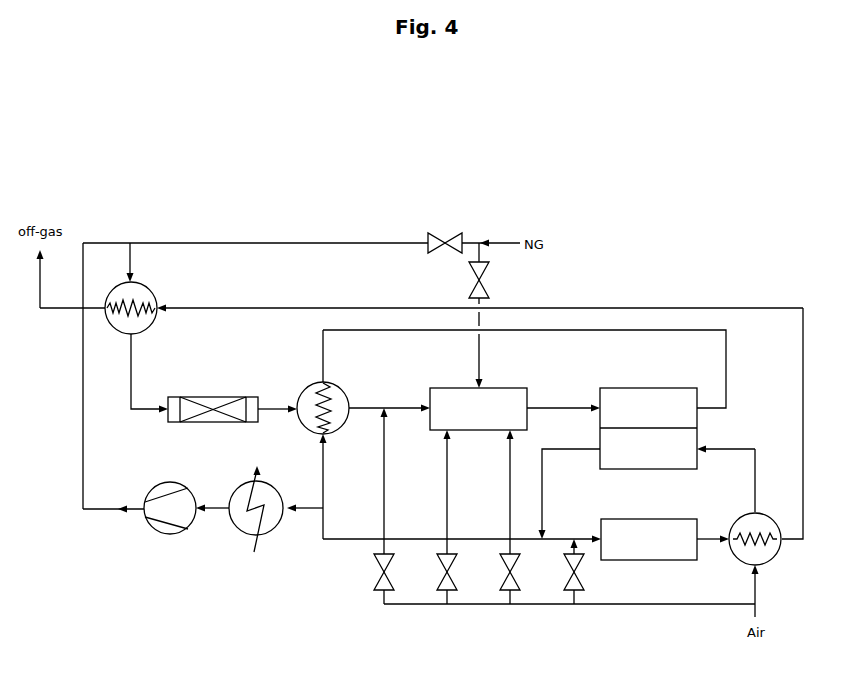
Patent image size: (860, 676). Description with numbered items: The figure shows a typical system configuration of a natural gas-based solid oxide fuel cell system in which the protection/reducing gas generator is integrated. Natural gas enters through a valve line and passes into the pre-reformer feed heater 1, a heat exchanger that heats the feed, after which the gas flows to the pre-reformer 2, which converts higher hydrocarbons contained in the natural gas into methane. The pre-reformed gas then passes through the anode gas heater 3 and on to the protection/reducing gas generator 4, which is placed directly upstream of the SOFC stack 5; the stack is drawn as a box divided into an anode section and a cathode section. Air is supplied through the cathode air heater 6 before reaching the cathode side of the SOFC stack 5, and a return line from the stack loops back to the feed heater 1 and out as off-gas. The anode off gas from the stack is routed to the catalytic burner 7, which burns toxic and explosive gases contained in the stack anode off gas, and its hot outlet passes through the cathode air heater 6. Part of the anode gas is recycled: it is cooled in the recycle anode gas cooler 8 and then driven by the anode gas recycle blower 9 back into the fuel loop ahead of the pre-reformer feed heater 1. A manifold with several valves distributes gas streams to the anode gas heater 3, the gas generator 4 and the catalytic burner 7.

The pre-reformer feed heater 1 is at (147, 330).
The pre-reformer 2 is at (186, 422).
The anode gas heater 3 is at (341, 426).
The protection/reducing gas generator 4 is at (446, 388).
The SOFC stack 5 is at (618, 388).
The cathode air heater 6 is at (773, 518).
The catalytic burner 7 is at (618, 519).
The recycle anode gas cooler 8 is at (275, 529).
The anode gas recycle blower 9 is at (187, 527).